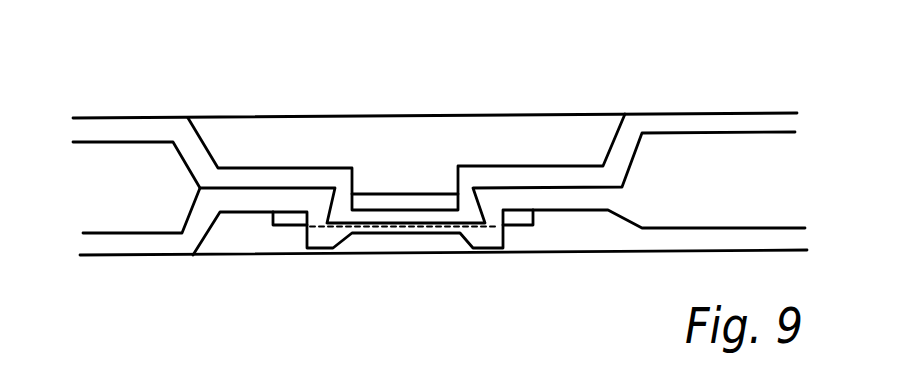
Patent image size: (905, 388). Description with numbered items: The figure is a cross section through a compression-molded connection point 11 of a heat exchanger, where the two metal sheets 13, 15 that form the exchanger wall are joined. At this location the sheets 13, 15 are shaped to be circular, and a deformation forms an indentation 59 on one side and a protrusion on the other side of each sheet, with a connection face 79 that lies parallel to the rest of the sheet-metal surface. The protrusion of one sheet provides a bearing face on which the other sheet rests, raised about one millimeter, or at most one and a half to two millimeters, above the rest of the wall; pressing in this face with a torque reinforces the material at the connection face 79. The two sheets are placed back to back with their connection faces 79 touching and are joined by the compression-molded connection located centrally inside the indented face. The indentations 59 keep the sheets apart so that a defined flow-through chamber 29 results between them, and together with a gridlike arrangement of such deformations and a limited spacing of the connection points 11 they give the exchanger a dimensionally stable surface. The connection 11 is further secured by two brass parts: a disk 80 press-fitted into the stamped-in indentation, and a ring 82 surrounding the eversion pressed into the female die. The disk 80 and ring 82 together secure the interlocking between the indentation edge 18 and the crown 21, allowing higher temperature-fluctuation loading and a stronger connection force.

The connection point 11 is at (300, 290).
The metal sheet 13 is at (757, 112).
The metal sheet 15 is at (770, 227).
The indentation edge 18 is at (484, 199).
The crown 21 is at (479, 208).
The flow-through chamber 29 is at (727, 203).
The indentation 59 is at (537, 127).
The connection face 79 is at (270, 167).
The disk 80 is at (417, 194).
The ring 82 is at (278, 226).